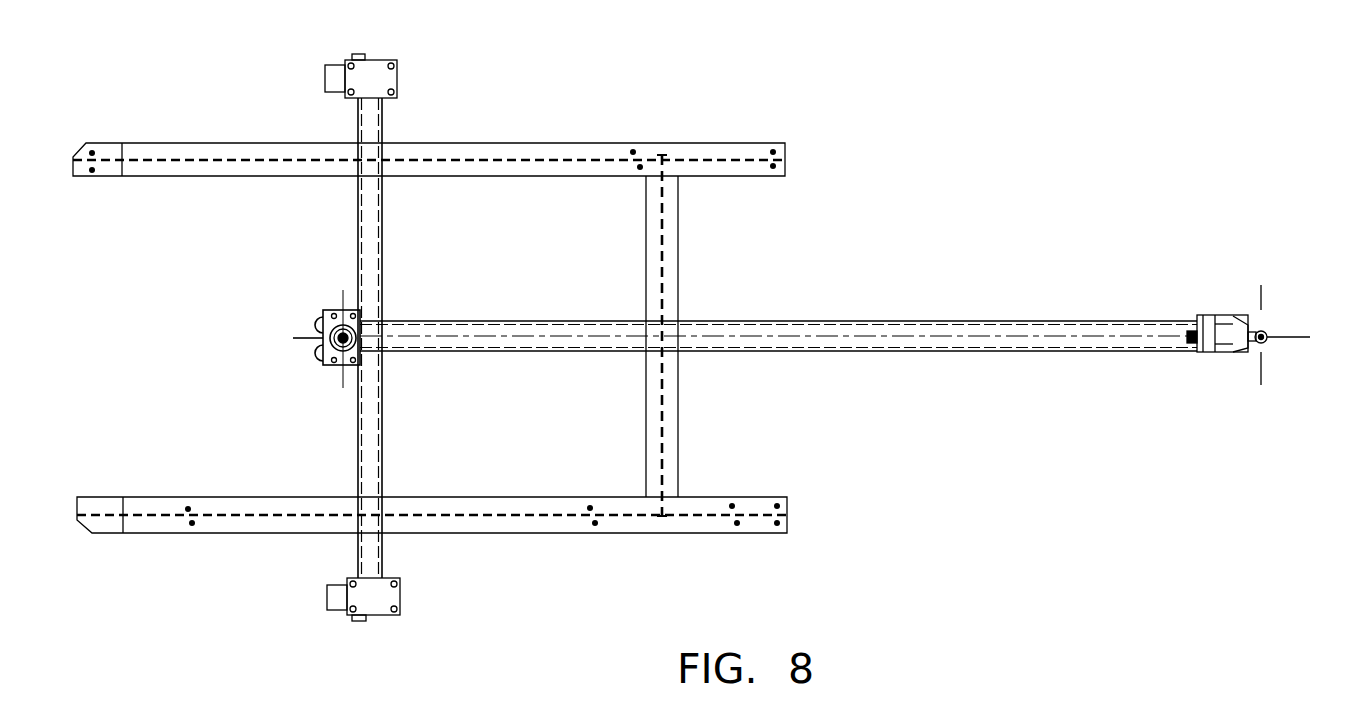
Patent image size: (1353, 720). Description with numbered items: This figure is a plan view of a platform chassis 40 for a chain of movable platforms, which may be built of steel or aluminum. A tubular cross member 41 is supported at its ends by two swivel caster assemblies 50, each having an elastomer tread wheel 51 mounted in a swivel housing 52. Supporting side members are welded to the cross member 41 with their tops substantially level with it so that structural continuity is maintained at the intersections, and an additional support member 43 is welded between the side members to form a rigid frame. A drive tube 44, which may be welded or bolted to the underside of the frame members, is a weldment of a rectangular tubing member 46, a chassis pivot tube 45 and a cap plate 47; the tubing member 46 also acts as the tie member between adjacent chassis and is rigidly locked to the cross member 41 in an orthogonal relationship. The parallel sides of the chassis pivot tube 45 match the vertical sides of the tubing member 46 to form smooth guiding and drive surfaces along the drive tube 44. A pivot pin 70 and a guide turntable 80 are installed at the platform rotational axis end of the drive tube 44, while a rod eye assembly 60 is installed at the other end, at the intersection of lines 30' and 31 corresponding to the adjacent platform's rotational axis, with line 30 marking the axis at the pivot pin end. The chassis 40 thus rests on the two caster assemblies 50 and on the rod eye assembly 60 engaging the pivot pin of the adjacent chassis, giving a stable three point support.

The line 30 is at (280, 354).
The line 30' is at (1300, 358).
The line 31 is at (1285, 338).
The chassis 40 is at (430, 312).
The cross member 41 is at (358, 108).
The support member 43 is at (680, 290).
The drive tube 44 is at (797, 365).
The chassis pivot tube 45 is at (318, 350).
The tubing member 46 is at (945, 320).
The cap plate 47 is at (333, 366).
The swivel caster assemblies 50 is at (305, 584).
The elastomer tread wheels 51 is at (327, 596).
The swivel housings 52 is at (350, 617).
The rod eye assembly 60 is at (1195, 308).
The pivot pin 70 is at (343, 310).
The guide turntable 80 is at (305, 308).